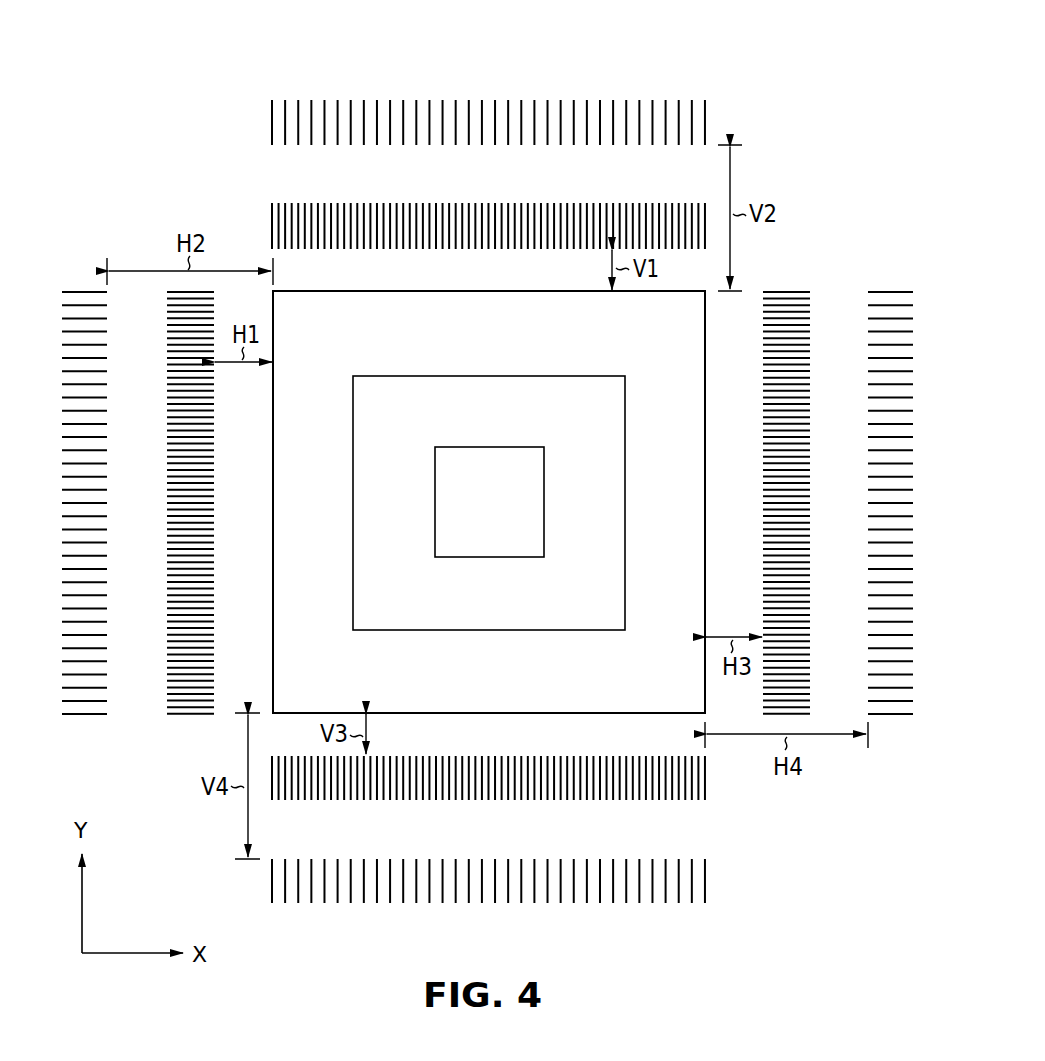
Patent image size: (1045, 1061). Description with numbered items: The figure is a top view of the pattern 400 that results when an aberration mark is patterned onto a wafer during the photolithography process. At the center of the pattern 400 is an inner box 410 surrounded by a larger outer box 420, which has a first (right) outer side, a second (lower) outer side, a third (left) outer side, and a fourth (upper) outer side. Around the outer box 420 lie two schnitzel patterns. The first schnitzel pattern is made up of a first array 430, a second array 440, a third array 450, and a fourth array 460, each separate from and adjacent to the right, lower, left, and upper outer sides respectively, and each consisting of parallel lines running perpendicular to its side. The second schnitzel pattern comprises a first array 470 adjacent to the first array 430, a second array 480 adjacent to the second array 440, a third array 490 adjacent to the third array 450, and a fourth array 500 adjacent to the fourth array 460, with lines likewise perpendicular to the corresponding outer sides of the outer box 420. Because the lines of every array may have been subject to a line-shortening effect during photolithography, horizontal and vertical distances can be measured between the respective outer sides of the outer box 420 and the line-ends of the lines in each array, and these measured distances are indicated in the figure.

The pattern 400 is at (776, 88).
The inner box 410 is at (488, 446).
The outer box 420 is at (489, 291).
The first array 430 is at (810, 330).
The second array 440 is at (619, 756).
The third array 450 is at (168, 657).
The fourth array 460 is at (641, 204).
The first array 470 is at (892, 715).
The second array 480 is at (626, 860).
The third array 490 is at (84, 287).
The fourth array 500 is at (628, 100).